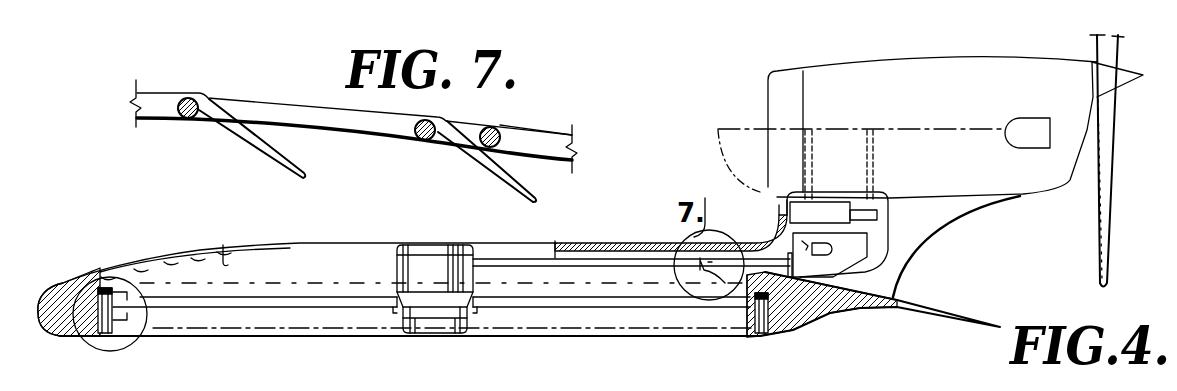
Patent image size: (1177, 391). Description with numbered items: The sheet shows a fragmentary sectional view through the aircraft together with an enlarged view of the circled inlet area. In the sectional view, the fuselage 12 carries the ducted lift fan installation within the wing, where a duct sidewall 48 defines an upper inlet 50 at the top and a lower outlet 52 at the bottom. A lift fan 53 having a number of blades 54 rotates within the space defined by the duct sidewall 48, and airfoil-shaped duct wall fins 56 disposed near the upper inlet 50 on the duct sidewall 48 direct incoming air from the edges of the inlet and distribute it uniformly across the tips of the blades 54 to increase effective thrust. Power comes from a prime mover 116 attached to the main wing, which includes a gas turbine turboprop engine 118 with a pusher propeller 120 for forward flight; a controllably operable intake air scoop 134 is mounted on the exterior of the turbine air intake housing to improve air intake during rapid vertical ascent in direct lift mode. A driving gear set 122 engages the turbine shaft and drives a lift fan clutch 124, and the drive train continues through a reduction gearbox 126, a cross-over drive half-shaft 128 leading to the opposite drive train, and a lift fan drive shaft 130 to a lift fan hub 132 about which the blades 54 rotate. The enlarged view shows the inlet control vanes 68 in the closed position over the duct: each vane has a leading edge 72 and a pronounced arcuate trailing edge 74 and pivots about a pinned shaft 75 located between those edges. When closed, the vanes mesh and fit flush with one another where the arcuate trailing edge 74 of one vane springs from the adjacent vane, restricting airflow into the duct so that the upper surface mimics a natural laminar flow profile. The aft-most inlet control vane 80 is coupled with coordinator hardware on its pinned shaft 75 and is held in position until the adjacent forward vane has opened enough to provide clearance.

In FIG. 4, the fuselage 12 is at (88, 336).
In FIG. 4, the duct sidewall 48 is at (143, 336).
In FIG. 4, the upper inlet 50 is at (330, 247).
In FIG. 4, the lower outlet 52 is at (315, 334).
In FIG. 4, the lift fan 53 is at (395, 300).
In FIG. 4, the blades 54 is at (168, 300).
In FIG. 4, the duct wall fins 56 is at (120, 270).
In FIG. 7, the inlet control vanes 68 is at (162, 96).
In FIG. 7, the leading edge 72 is at (218, 96).
In FIG. 7, the arcuate trailing edge 74 is at (517, 186).
In FIG. 7, the pinned shaft 75 is at (186, 121).
In FIG. 7, the aft-most inlet control vane 80 is at (540, 134).
In FIG. 4, the prime mover 116 is at (1098, 265).
In FIG. 4, the gas turbine turboprop engine 118 is at (930, 127).
In FIG. 4, the pusher propeller 120 is at (1103, 213).
In FIG. 4, the driving gear set 122 is at (823, 127).
In FIG. 4, the lift fan clutch 124 is at (835, 208).
In FIG. 4, the reduction gearbox 126 is at (862, 247).
In FIG. 4, the cross-over drive half-shaft 128 is at (787, 232).
In FIG. 4, the lift fan drive shaft 130 is at (632, 258).
In FIG. 4, the lift fan hub 132 is at (433, 253).
In FIG. 4, the intake air scoop 134 is at (718, 152).